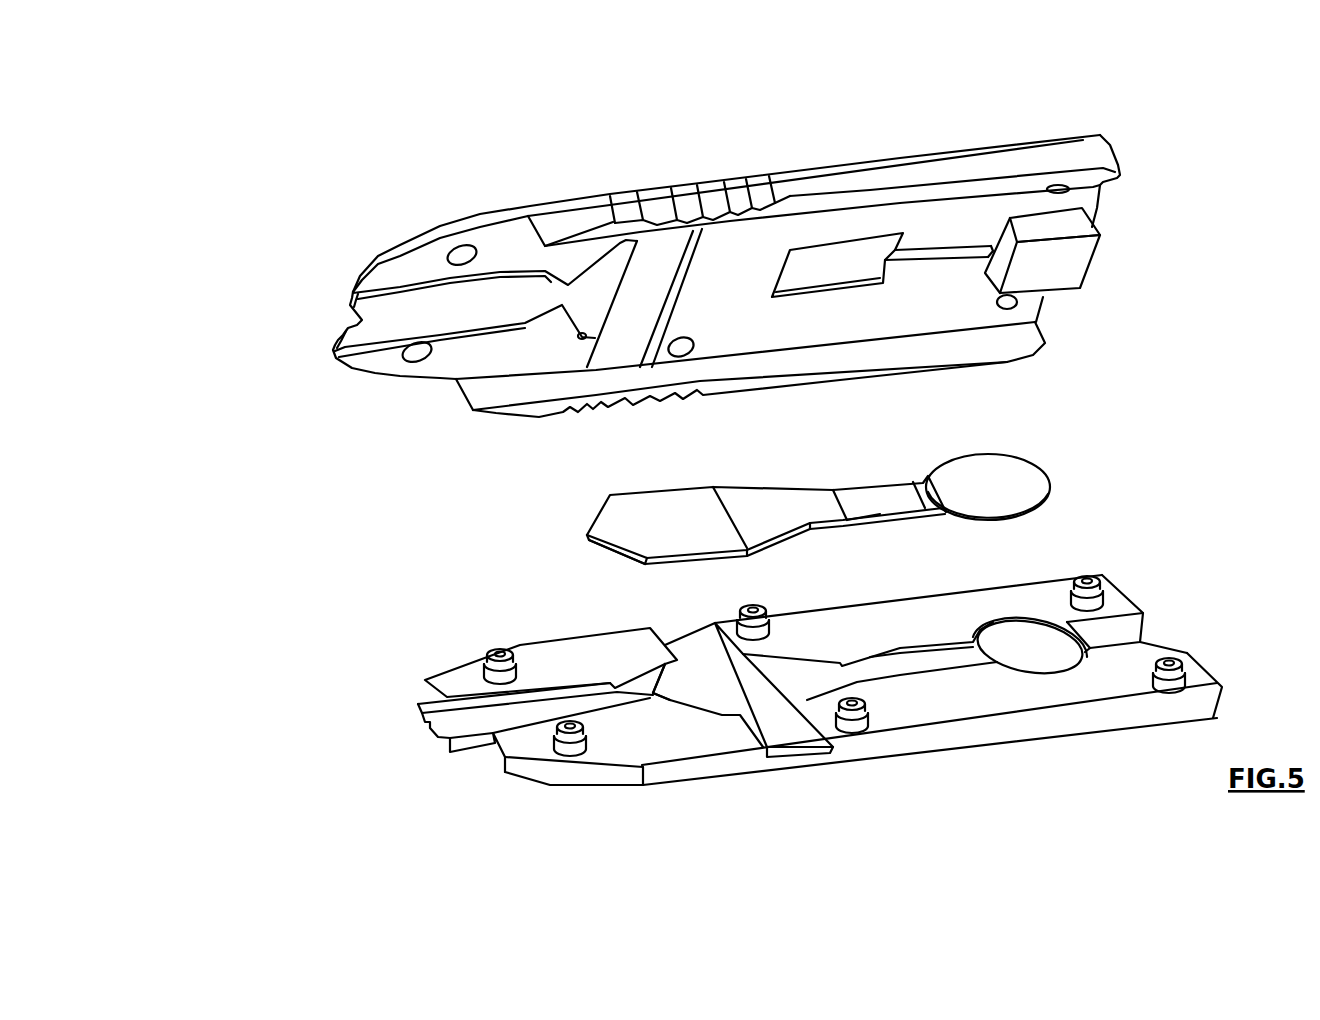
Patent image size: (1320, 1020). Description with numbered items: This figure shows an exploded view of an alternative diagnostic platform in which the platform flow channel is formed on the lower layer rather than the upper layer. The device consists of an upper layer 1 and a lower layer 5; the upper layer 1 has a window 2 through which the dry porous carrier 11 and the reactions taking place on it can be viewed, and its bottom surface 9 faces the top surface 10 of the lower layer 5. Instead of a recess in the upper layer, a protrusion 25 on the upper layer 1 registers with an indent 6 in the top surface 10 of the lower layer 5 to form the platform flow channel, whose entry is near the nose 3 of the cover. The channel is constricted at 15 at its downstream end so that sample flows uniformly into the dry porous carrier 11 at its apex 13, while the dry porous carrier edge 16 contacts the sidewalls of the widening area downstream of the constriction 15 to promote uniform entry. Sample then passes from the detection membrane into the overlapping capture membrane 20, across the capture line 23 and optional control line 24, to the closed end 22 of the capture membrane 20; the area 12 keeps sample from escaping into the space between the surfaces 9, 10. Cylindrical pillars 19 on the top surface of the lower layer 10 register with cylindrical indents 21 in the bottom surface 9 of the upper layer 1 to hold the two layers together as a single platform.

The upper layer 1 is at (1100, 257).
The window 2 is at (834, 258).
The blade opening 3 is at (348, 315).
The lower layer 5 is at (1143, 630).
The indent 6 is at (490, 717).
The bottom surface of the upper layer 9 is at (950, 235).
The top surface of the lower layer 10 is at (983, 705).
The dry porous carrier 11 is at (657, 513).
The area 12 is at (778, 737).
The apex 13 is at (719, 514).
The constriction 15 is at (655, 697).
The dry porous carrier edge 16 is at (620, 553).
The cylindrical pillars 19 is at (1095, 585).
The capture membrane 20 is at (770, 513).
The cylindrical indents 21 is at (1122, 181).
The closed end of capture membrane 22 is at (1052, 482).
The capture line 23 is at (847, 520).
The control line 24 is at (923, 503).
The protrusion 25 is at (447, 308).